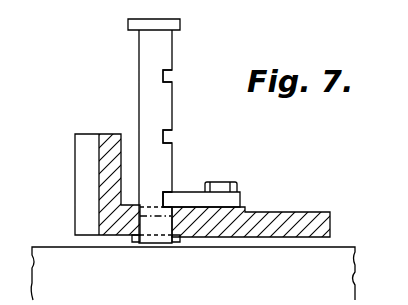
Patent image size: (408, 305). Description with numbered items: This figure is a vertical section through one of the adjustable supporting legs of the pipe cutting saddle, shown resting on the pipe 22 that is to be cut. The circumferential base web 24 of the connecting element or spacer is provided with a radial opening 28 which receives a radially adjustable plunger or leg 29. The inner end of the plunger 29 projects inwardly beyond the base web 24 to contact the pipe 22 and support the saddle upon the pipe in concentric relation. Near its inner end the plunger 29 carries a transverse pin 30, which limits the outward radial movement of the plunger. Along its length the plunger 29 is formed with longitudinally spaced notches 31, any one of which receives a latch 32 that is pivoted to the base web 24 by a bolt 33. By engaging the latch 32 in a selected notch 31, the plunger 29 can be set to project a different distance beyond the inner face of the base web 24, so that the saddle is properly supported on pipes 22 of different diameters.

The pipe 22 is at (327, 258).
The base web 24 is at (197, 222).
The radial opening 28 is at (135, 224).
The plunger 29 is at (158, 60).
The transverse pin 30 is at (184, 241).
The notch 31 is at (166, 80).
The latch 32 is at (228, 200).
The bolt 33 is at (232, 182).